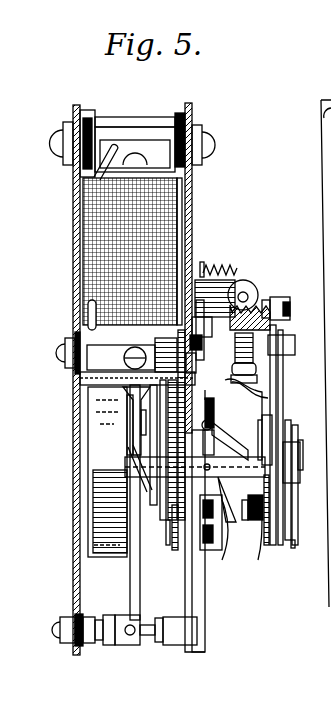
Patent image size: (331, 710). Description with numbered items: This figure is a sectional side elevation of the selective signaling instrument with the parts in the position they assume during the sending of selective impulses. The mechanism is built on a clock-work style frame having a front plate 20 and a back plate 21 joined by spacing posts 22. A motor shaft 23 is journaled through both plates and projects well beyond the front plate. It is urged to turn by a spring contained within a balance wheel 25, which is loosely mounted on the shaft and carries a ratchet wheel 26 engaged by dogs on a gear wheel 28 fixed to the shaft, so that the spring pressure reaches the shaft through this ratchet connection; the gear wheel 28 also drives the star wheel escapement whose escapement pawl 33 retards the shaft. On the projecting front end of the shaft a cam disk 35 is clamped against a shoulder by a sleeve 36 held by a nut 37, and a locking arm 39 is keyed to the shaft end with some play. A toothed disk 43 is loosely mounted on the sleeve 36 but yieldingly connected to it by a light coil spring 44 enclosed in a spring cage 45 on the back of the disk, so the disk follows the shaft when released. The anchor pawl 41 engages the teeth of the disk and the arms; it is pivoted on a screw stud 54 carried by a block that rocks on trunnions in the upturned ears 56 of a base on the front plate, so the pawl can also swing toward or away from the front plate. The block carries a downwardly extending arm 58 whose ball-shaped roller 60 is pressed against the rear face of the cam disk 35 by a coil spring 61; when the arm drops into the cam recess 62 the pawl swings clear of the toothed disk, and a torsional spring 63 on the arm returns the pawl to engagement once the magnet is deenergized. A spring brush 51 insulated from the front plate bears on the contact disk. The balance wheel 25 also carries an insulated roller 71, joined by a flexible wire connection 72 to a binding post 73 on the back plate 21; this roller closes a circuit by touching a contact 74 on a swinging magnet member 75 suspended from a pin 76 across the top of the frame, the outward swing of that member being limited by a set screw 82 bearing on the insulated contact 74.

The front plate 20 is at (205, 614).
The back plate 21 is at (78, 585).
The spacing posts 22 is at (185, 645).
The motor shaft 23 is at (298, 470).
The balance wheel 25 is at (100, 532).
The ratchet wheel 26 is at (170, 492).
The gear wheel 28 is at (180, 548).
The escapement pawl 33 is at (92, 380).
The cam disk 35 is at (246, 399).
The sleeve 36 is at (195, 489).
The nut 37 is at (292, 492).
The locking arm 39 is at (293, 546).
The anchor pawl 41 is at (282, 346).
The toothed disk 43 is at (276, 378).
The coil spring 44 is at (259, 530).
The spring cage 45 is at (262, 522).
The spring brush 51 is at (226, 434).
The screw stud 54 is at (290, 310).
The upturned ears 56 is at (235, 290).
The downwardly extending arm 58 is at (226, 396).
The ball-shaped roller 60 is at (201, 339).
The coil spring 61 is at (209, 262).
The cam recess 62 is at (214, 560).
The torsional spring 63 is at (235, 346).
The roller 71 is at (134, 410).
The flexible wire connection 72 is at (131, 583).
The binding post 73 is at (128, 645).
The contact 74 is at (72, 356).
The swinging magnet member 75 is at (83, 250).
The pin 76 is at (125, 125).
The set screw 82 is at (132, 355).